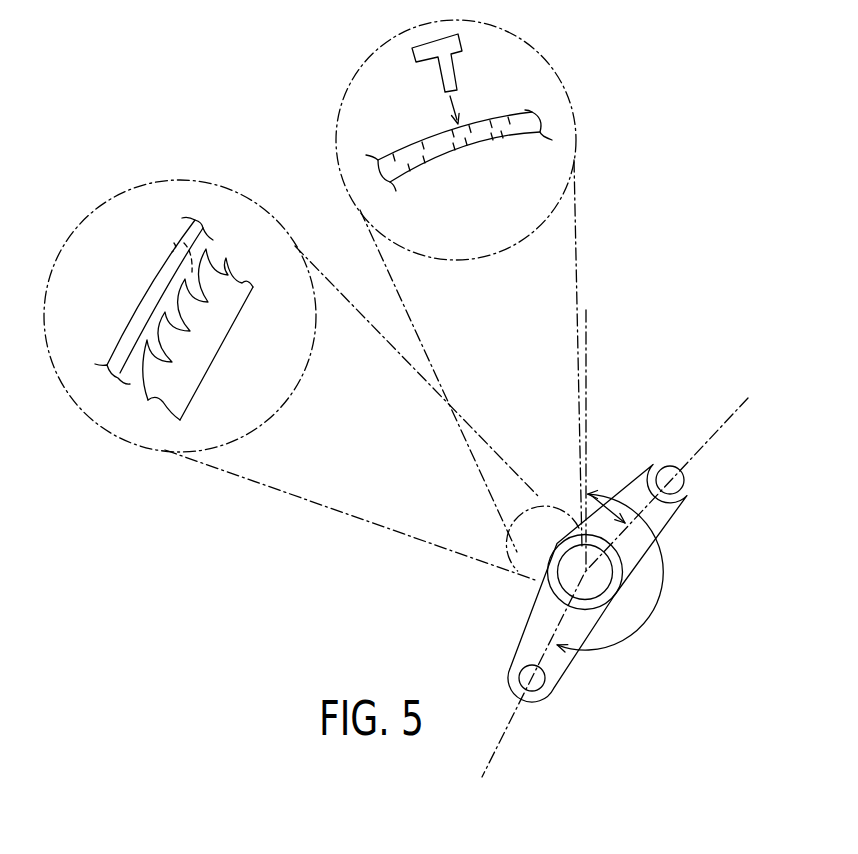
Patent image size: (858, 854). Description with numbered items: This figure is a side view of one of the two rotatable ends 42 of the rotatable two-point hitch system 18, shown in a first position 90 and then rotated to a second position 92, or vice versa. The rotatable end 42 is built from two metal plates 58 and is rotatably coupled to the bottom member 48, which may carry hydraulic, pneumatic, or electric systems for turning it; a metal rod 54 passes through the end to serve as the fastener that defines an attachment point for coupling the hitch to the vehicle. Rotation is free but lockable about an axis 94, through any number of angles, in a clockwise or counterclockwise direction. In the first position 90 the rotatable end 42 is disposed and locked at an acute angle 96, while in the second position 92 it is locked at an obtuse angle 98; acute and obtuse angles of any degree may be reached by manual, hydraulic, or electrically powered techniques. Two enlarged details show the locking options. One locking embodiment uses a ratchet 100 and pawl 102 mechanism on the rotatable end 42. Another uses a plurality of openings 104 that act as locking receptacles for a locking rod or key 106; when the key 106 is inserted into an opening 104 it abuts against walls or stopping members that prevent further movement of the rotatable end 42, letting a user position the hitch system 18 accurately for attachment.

The hitch system 18 is at (638, 523).
The rotatable end 42 is at (559, 546).
The bottom member 48 is at (604, 572).
The metal rod 54 is at (662, 468).
The metal plate 58 is at (659, 517).
The position 90 is at (722, 483).
The position 92 is at (528, 718).
The axis 94 is at (586, 340).
The acute angle 96 is at (613, 508).
The obtuse angle 98 is at (663, 588).
The ratchet 100 is at (195, 350).
The pawl 102 is at (174, 243).
The openings 104 is at (506, 140).
The locking key 106 is at (437, 73).